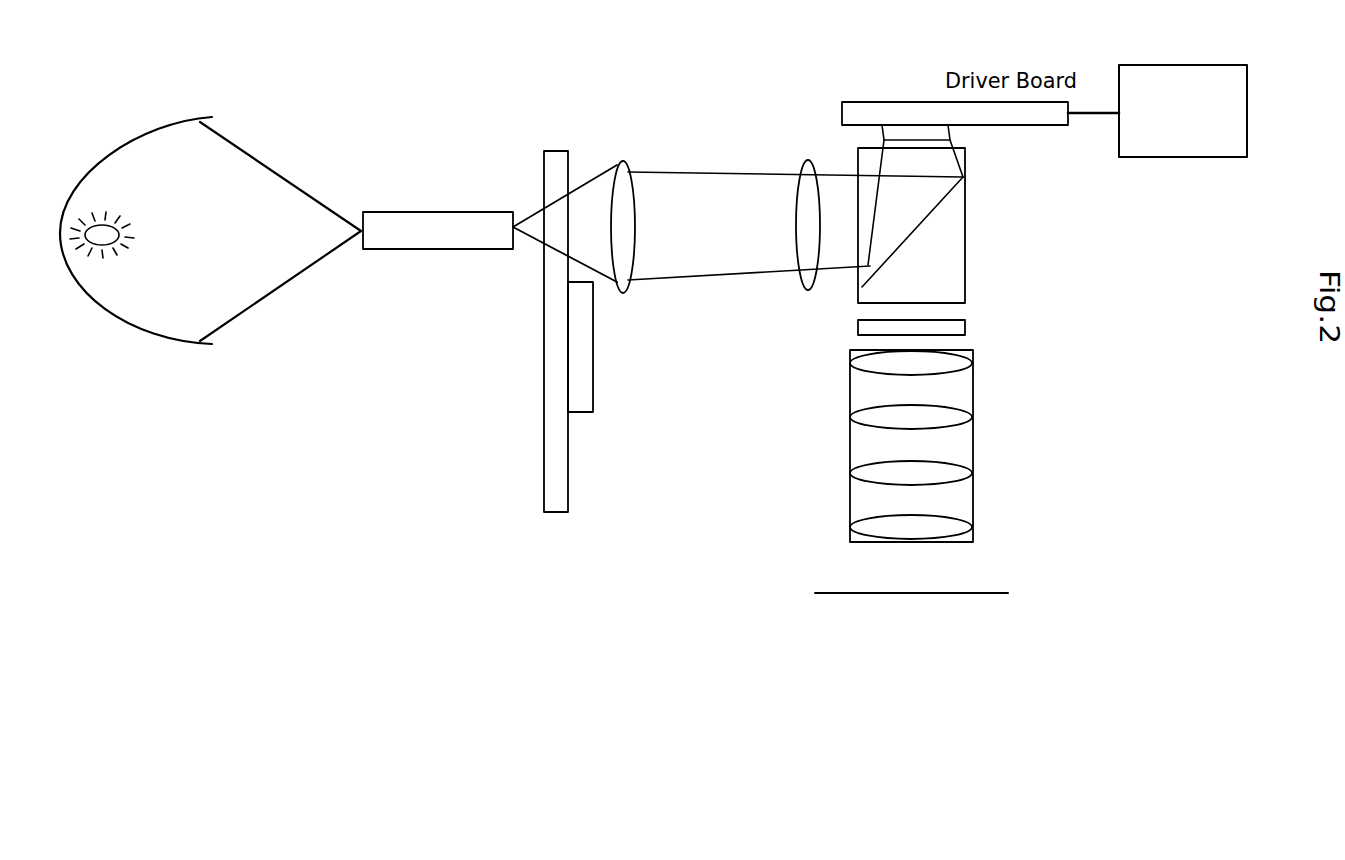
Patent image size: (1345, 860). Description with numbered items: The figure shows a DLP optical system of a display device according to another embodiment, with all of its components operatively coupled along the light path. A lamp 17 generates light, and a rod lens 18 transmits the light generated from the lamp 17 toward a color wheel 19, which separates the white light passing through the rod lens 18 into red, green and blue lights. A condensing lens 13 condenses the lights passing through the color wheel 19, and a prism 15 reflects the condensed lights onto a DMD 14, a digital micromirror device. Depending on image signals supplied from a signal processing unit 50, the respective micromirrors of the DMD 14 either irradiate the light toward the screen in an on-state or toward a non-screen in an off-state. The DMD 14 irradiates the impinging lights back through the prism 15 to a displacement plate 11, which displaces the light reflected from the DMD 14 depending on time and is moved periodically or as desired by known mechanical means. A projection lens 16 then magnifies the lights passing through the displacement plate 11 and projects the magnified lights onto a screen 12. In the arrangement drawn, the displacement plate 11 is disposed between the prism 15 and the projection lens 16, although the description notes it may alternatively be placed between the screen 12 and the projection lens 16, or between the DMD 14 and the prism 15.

The displacement plate 11 is at (965, 327).
The screen 12 is at (967, 593).
The condensing lens 13 is at (623, 293).
The DMD 14 is at (920, 128).
The prism 15 is at (965, 248).
The projection lens 16 is at (973, 473).
The lamp 17 is at (147, 330).
The rod lens 18 is at (380, 212).
The color wheel 19 is at (543, 375).
The signal processing unit 50 is at (1183, 157).